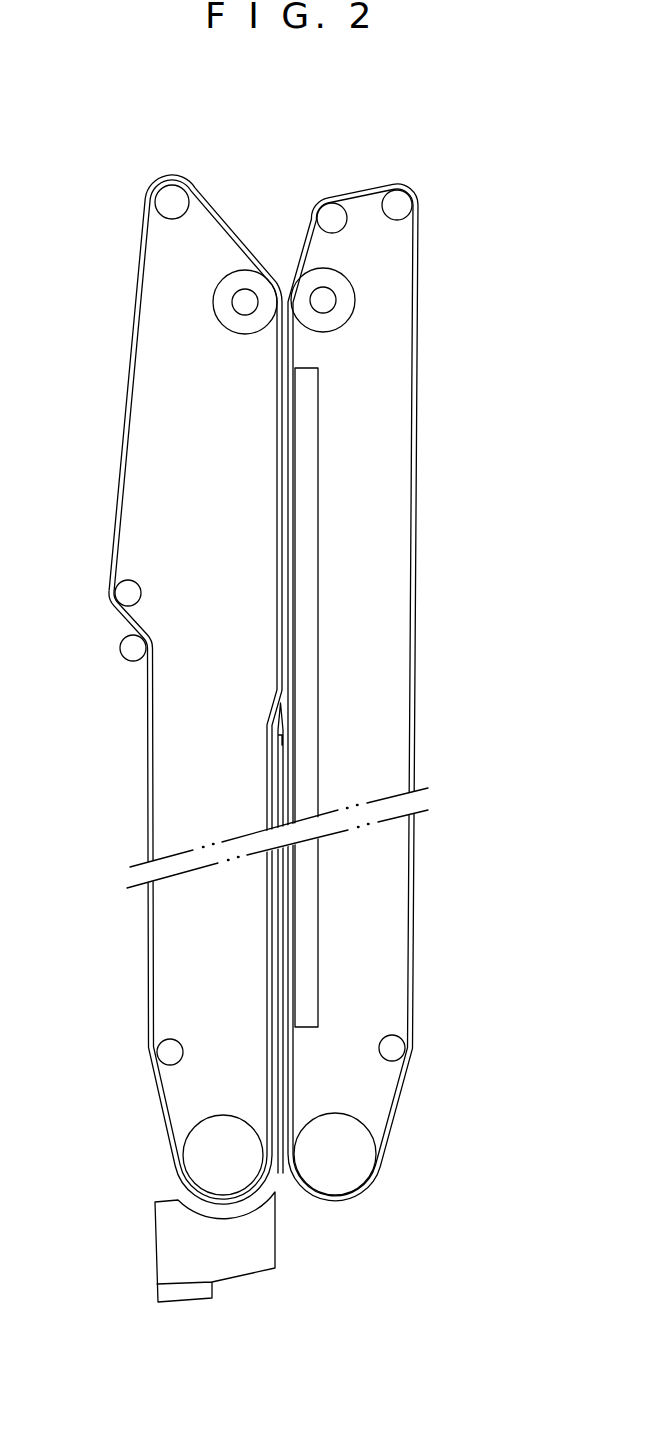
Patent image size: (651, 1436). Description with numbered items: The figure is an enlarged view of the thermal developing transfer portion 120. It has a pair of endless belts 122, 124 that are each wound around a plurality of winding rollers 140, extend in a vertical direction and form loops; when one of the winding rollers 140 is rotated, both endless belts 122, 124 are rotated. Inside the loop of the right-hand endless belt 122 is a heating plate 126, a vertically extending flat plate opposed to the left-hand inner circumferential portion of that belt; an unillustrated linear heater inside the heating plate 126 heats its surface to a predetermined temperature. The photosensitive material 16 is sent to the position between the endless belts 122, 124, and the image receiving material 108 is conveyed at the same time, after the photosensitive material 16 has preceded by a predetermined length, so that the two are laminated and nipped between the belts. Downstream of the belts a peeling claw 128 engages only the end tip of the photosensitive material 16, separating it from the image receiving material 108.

The photosensitive material 16 is at (270, 914).
The image receiving material 108 is at (297, 938).
The thermal developing transfer portion 120 is at (411, 692).
The endless belt 122 is at (415, 515).
The endless belt 124 is at (150, 783).
The heating plate 126 is at (308, 627).
The peeling claw 128 is at (155, 1237).
The winding rollers 140 is at (237, 333).